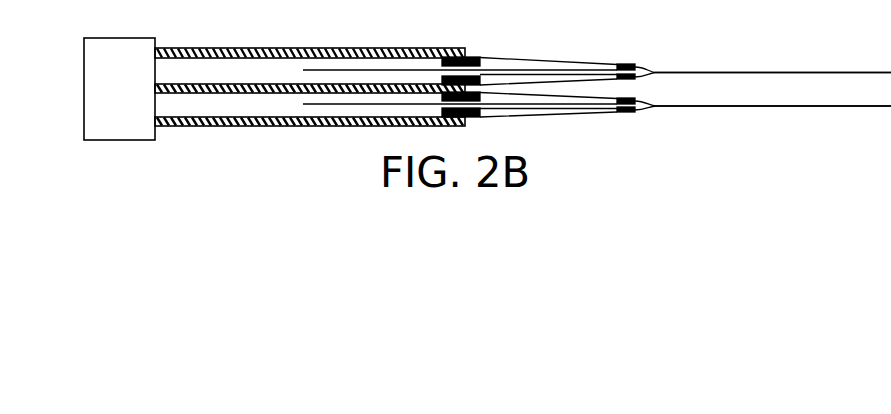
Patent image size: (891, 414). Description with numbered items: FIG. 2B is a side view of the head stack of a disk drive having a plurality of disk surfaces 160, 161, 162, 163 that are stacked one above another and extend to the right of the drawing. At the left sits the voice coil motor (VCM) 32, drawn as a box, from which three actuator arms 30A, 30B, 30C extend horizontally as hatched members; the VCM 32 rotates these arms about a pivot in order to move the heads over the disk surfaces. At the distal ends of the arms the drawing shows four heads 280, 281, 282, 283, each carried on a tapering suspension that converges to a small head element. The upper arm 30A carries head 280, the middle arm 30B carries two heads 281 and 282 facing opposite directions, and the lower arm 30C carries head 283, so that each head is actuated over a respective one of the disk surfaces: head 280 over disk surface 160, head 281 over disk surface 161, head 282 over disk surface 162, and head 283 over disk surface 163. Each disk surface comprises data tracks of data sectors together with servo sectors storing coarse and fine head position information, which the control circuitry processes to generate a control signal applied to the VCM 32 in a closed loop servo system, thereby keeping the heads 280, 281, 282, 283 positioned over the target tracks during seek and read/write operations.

The voice coil motor (VCM) 32 is at (82, 87).
The actuator arm 30A is at (208, 48).
The actuator arm 30B is at (250, 84).
The actuator arm 30C is at (287, 117).
The head 280 is at (635, 66).
The head 281 is at (650, 72).
The head 282 is at (652, 104).
The head 283 is at (635, 110).
The disk surface 160 is at (787, 72).
The disk surface 161 is at (825, 73).
The disk surface 162 is at (827, 106).
The disk surface 163 is at (835, 107).